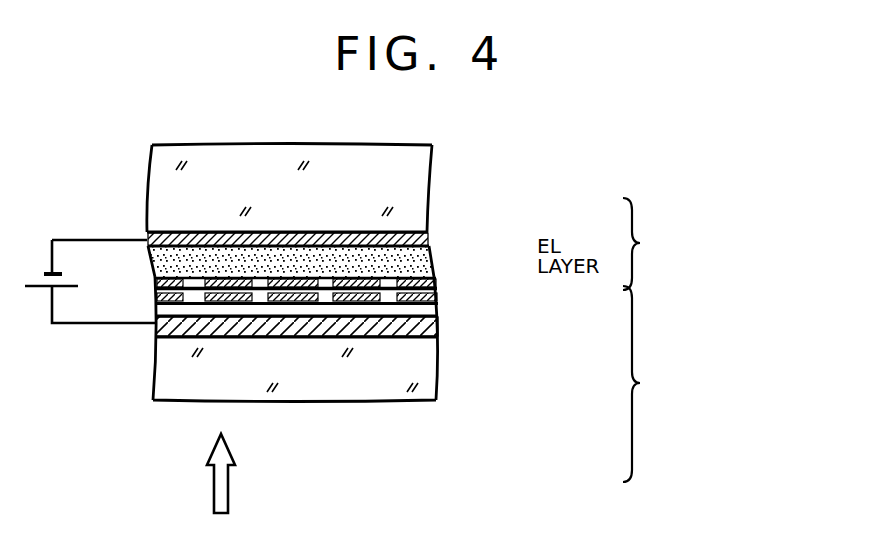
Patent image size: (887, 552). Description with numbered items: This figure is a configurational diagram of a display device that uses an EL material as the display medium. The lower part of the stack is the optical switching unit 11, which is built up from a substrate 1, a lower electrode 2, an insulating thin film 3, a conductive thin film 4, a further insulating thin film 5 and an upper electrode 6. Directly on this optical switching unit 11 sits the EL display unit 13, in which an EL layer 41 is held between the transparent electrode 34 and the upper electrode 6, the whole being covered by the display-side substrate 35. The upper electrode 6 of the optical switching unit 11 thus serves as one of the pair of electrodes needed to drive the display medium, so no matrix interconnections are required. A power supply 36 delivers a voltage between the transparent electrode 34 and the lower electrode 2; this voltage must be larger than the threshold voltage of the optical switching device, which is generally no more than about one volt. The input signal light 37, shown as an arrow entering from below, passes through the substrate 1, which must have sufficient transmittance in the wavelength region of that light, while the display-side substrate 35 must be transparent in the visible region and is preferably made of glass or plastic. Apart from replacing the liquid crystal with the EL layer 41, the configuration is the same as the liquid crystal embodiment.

The substrate 1 is at (438, 383).
The lower electrode 2 is at (440, 326).
The insulating thin film 3 is at (440, 312).
The conductive thin film 4 is at (440, 302).
The insulating thin film 5 is at (439, 292).
The upper electrode 6 is at (438, 282).
The optical switching unit 11 is at (716, 384).
The EL display unit 13 is at (716, 244).
The transparent electrode 34 is at (429, 236).
The display-side substrate 35 is at (428, 176).
The power supply 36 is at (47, 270).
The input signal light 37 is at (228, 484).
The EL layer 41 is at (433, 260).